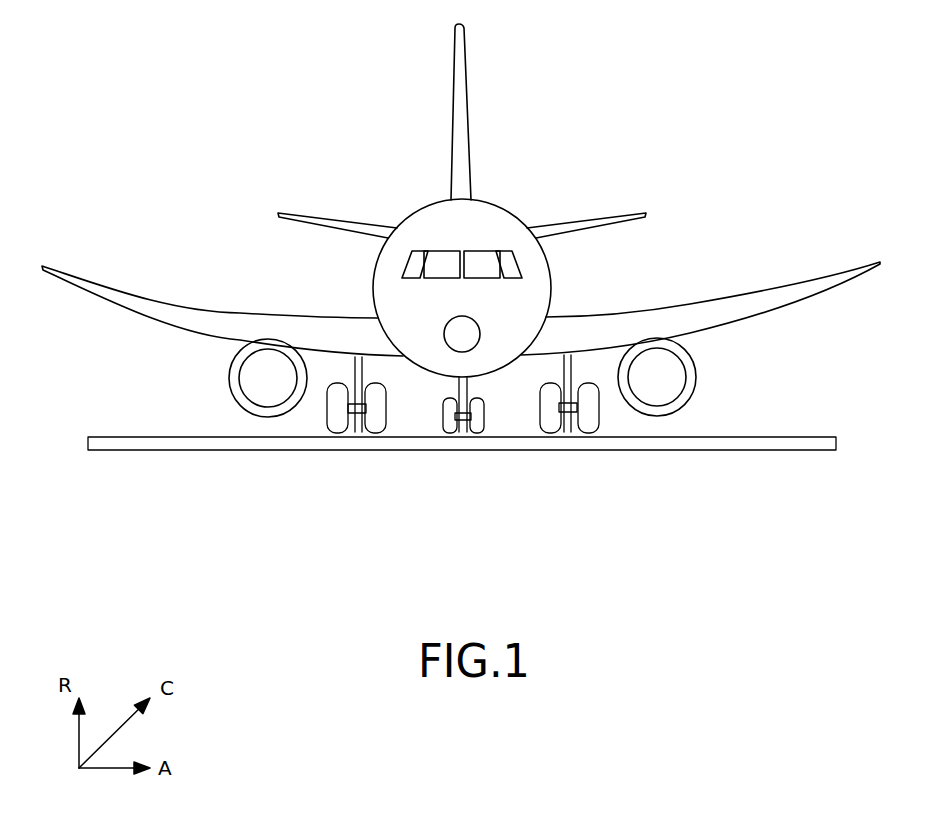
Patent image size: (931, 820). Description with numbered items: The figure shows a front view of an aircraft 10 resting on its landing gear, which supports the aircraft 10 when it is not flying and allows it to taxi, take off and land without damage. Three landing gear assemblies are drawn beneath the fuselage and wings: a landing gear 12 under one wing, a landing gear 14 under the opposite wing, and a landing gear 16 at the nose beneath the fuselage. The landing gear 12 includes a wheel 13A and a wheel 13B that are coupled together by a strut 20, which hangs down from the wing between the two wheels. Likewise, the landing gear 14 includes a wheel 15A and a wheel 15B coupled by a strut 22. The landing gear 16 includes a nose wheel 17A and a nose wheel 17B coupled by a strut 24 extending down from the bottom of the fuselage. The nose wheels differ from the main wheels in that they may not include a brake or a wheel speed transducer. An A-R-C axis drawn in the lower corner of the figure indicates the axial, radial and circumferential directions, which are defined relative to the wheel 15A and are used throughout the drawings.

The aircraft 10 is at (298, 110).
The landing gear 12 is at (651, 386).
The landing gear 14 is at (276, 459).
The landing gear 16 is at (509, 408).
The wheel 13A is at (600, 425).
The wheel 13B is at (555, 382).
The wheel 15A is at (323, 435).
The wheel 15B is at (392, 434).
The nose wheel 17A is at (487, 430).
The nose wheel 17B is at (442, 430).
The strut 20 is at (565, 422).
The strut 22 is at (353, 438).
The strut 24 is at (462, 424).